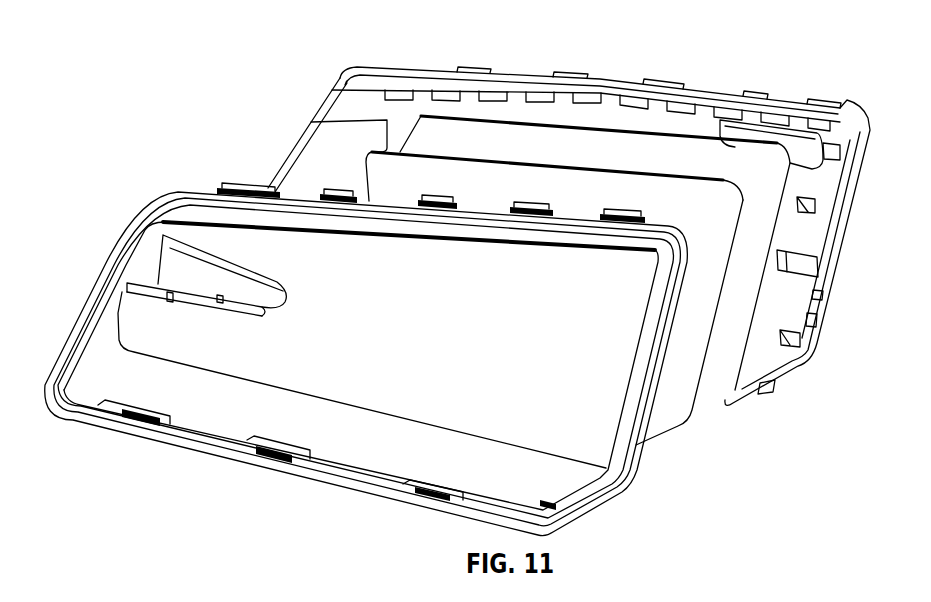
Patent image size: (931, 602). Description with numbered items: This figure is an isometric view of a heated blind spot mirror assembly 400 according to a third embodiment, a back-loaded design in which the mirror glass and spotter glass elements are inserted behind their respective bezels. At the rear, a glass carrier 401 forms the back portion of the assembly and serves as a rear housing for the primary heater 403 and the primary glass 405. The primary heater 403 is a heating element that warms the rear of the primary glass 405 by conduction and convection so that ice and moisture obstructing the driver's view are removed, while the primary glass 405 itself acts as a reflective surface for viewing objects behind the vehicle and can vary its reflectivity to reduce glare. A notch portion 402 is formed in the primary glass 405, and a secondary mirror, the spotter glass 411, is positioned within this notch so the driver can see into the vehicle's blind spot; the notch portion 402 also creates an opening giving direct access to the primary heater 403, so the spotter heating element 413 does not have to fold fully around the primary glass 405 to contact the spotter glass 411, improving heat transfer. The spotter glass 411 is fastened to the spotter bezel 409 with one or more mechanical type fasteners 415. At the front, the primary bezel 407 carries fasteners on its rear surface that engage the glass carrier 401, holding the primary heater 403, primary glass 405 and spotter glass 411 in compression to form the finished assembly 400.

The heated blind spot mirror assembly 400 is at (457, 270).
The glass carrier 401 is at (569, 205).
The notch portion 402 is at (440, 259).
The primary heater 403 is at (534, 215).
The primary glass 405 is at (699, 247).
The primary bezel 407 is at (367, 359).
The spotter bezel 409 is at (155, 291).
The spotter glass 411 is at (191, 245).
The spotter heating element 413 is at (316, 125).
The mechanical type fasteners 415 is at (181, 392).